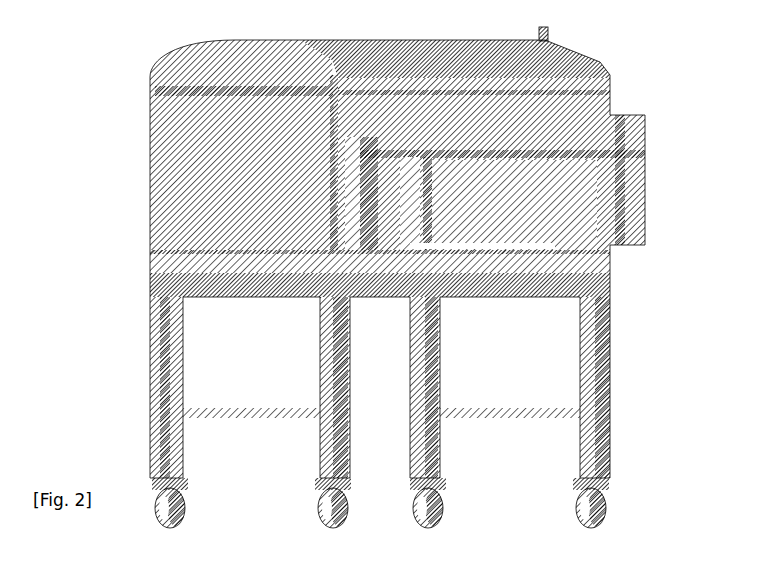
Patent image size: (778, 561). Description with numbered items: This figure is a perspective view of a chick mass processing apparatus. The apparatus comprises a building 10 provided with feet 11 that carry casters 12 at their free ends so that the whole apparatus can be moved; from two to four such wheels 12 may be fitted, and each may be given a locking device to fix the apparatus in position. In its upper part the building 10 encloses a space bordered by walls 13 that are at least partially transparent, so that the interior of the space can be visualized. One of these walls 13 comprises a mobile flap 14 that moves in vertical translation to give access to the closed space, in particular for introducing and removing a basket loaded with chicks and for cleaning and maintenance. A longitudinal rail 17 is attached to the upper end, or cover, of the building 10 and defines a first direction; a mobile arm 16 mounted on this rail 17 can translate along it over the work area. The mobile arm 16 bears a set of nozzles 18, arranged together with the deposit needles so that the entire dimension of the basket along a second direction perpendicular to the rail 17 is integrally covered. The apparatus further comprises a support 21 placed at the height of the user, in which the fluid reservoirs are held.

The building 10 is at (136, 66).
The feet 11 is at (612, 358).
The casters 12 is at (612, 517).
The walls 13 is at (150, 188).
The mobile flap 14 is at (614, 252).
The mobile arm 16 is at (612, 97).
The longitudinal rail 17 is at (592, 58).
The set of nozzles 18 is at (646, 167).
The support 21 is at (150, 142).